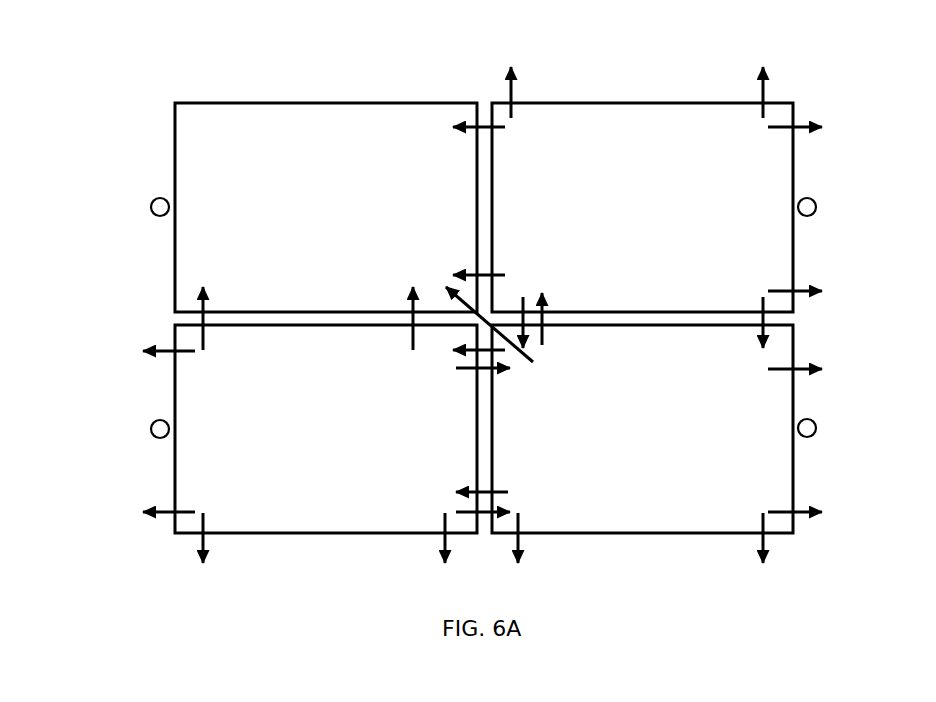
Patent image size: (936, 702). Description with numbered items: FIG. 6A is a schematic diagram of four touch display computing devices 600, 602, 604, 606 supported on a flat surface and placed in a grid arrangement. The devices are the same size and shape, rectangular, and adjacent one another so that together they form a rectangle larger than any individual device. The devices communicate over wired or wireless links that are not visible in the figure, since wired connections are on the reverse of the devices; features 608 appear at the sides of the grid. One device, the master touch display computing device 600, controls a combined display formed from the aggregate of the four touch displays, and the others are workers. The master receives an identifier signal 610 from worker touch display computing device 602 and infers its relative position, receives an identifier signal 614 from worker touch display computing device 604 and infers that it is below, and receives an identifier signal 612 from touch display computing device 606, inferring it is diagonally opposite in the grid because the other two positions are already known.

The master touch display computing device 600 is at (316, 103).
The worker touch display computing device 602 is at (641, 103).
The worker touch display computing device 604 is at (326, 429).
The worker touch display computing device 606 is at (642, 429).
The connection ports 608 is at (143, 220).
The identifier signal 610 is at (508, 127).
The identifier signal 612 is at (532, 350).
The identifier signal 614 is at (210, 338).